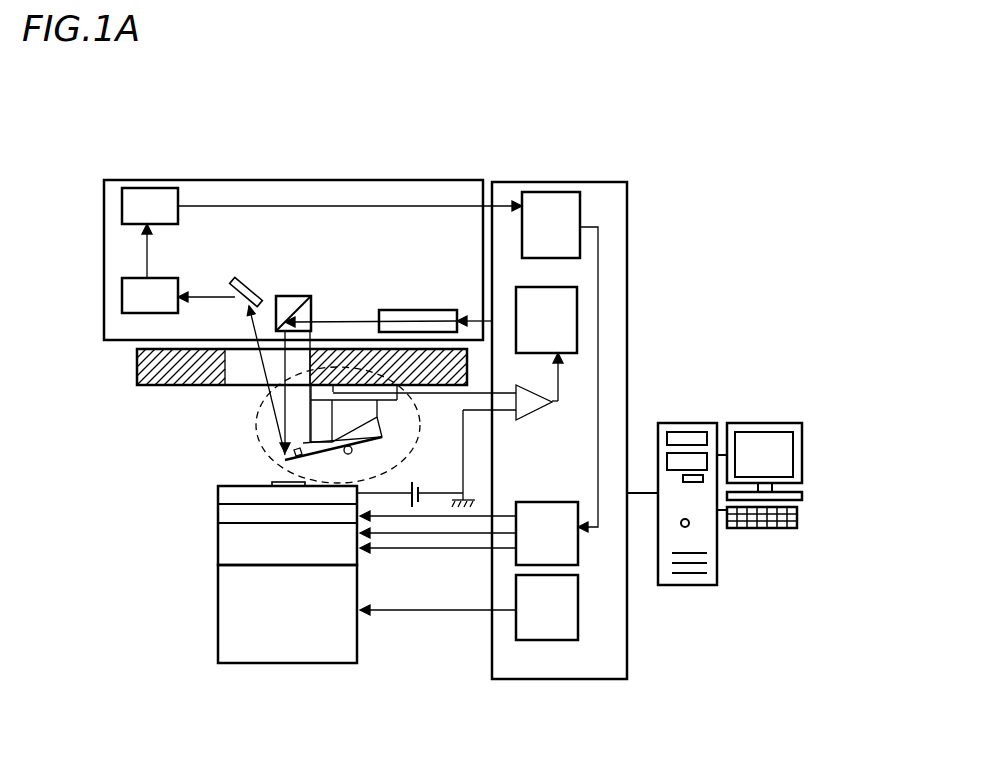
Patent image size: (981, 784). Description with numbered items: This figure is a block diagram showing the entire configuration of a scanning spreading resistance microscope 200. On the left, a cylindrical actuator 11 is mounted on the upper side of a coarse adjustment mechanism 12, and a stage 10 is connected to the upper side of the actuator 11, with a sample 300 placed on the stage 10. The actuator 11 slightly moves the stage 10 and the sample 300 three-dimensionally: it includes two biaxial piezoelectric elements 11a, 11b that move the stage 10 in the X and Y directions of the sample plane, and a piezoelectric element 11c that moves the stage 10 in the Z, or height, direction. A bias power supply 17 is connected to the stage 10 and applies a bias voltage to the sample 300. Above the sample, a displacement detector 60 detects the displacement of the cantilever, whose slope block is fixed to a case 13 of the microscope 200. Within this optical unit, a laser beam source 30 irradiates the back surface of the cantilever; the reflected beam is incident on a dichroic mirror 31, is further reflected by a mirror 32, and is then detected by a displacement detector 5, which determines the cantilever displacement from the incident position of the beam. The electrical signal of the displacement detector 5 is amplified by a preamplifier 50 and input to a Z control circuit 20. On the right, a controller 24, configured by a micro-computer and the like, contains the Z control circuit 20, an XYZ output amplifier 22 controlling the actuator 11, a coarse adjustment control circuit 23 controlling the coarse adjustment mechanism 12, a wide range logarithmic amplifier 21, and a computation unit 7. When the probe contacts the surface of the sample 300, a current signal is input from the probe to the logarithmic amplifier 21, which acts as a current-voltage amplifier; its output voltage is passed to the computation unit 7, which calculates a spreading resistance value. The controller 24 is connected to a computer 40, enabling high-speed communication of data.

The scanning spreading resistance microscope 200 is at (675, 97).
The displacement detector 60 is at (293, 179).
The preamplifier 50 is at (128, 195).
The displacement detector 5 is at (145, 302).
The mirror 32 is at (247, 280).
The dichroic mirror 31 is at (297, 298).
The laser beam source 30 is at (385, 313).
The case 13 is at (152, 386).
The sample 300 is at (268, 481).
The bias power supply 17 is at (417, 483).
The stage 10 is at (225, 493).
The actuator 11 is at (205, 525).
The piezoelectric element 11c is at (232, 517).
The piezoelectric element 11a is at (232, 548).
The piezoelectric element 11b is at (247, 552).
The coarse adjustment mechanism 12 is at (228, 617).
The controller 24 is at (627, 222).
The Z control circuit 20 is at (548, 197).
The computation unit 7 is at (563, 327).
The logarithmic amplifier 21 is at (533, 412).
The XYZ output amplifier 22 is at (573, 540).
The coarse adjustment control circuit 23 is at (542, 634).
The computer 40 is at (693, 407).